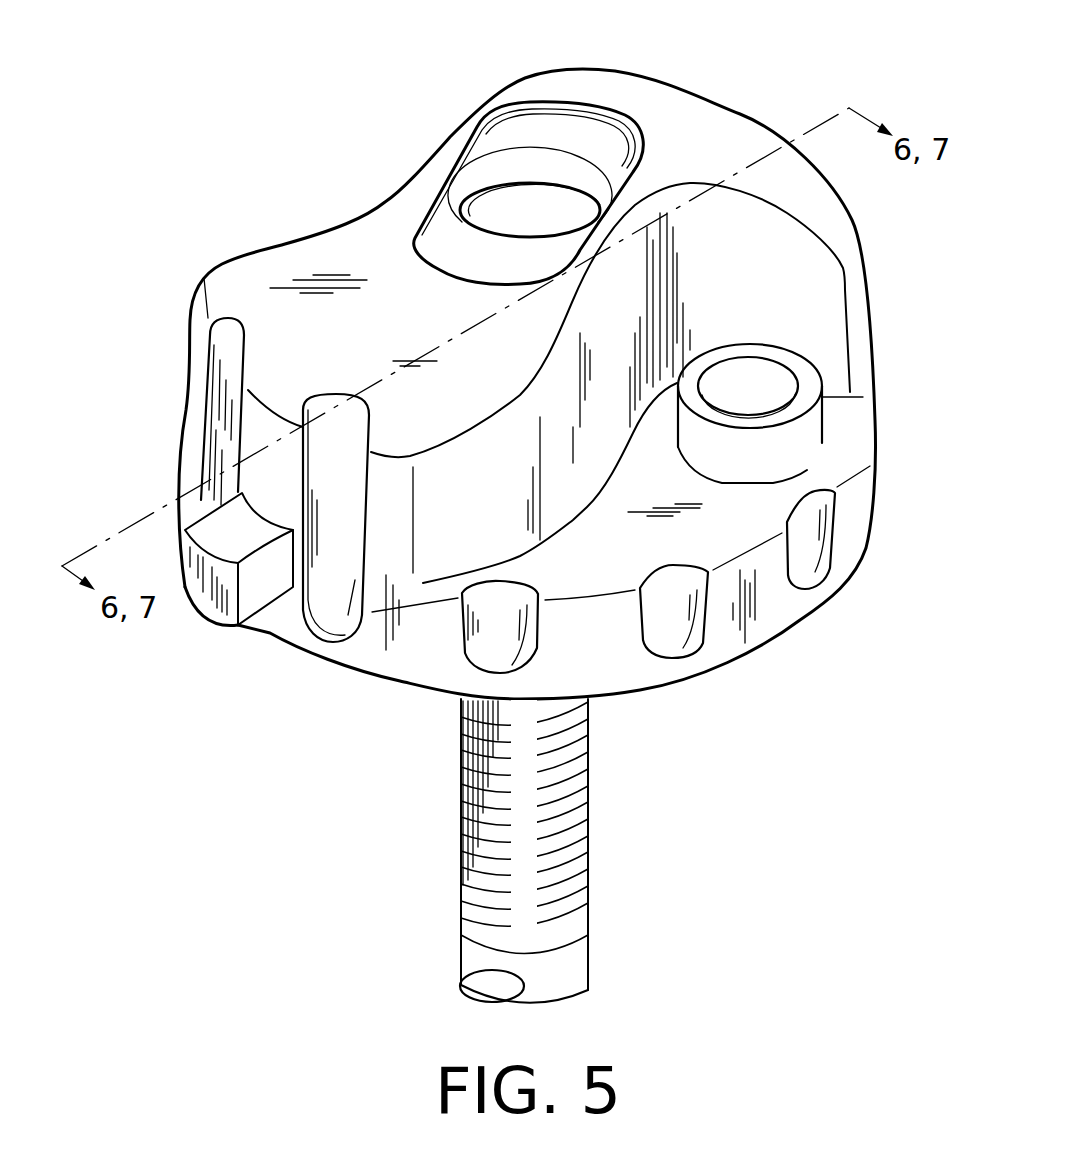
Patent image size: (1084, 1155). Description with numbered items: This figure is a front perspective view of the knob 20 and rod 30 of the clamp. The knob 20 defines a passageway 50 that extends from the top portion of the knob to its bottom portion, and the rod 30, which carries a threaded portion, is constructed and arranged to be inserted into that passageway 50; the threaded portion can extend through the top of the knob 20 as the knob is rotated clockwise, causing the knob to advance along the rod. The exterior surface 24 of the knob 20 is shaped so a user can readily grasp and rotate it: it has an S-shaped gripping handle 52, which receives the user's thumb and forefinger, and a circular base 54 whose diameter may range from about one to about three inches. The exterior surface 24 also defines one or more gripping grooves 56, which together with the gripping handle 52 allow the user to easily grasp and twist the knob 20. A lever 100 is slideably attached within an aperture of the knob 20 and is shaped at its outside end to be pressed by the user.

The knob 20 is at (758, 97).
The exterior surface 24 is at (230, 284).
The rod 30 is at (608, 879).
The passageway 50 is at (488, 171).
The gripping handle 52 is at (813, 268).
The circular base 54 is at (782, 610).
The gripping grooves 56 is at (320, 464).
The lever 100 is at (213, 505).